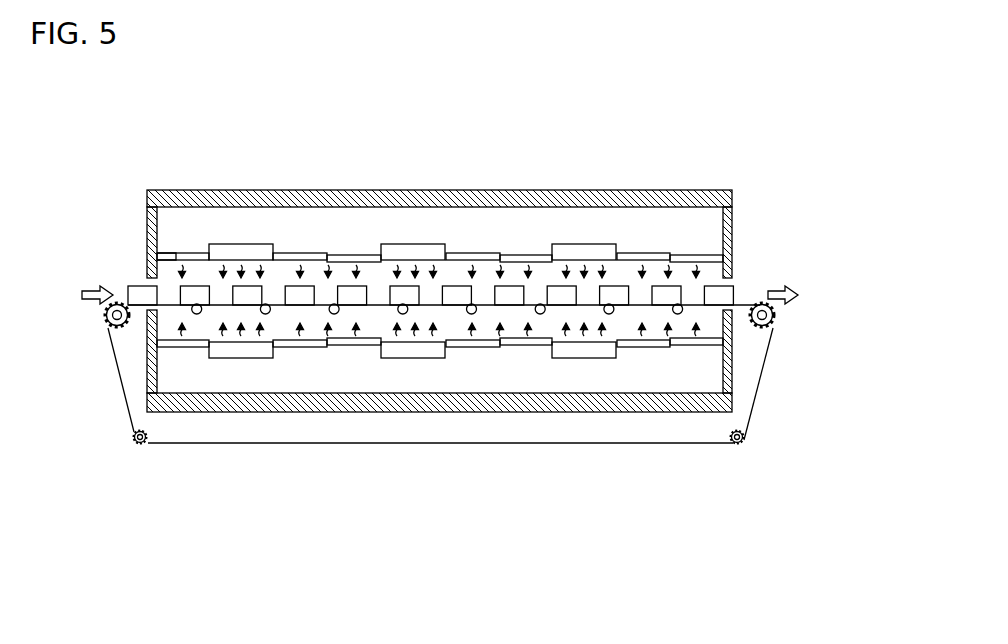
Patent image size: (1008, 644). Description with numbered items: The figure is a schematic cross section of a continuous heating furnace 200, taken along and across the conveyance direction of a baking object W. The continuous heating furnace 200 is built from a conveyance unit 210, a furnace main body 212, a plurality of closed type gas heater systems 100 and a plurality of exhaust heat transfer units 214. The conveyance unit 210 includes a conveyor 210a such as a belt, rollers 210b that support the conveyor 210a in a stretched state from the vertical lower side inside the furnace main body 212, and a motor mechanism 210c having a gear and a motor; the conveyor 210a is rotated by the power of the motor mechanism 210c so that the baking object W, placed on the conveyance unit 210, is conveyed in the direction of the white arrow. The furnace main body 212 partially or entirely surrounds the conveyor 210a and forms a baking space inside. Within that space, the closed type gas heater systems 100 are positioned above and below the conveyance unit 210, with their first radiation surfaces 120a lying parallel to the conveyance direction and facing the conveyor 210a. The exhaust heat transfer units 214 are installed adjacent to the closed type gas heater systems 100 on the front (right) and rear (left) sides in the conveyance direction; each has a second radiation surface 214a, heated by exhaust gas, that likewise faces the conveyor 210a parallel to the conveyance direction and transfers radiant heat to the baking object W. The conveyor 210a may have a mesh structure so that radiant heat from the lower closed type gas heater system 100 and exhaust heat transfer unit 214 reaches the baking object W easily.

The continuous heating furnace 200 is at (697, 73).
The furnace main body 212 is at (713, 190).
The exhaust heat transfer unit 214 is at (182, 253).
The second radiation surface 214a is at (171, 265).
The closed type gas heater system 100 is at (240, 244).
The first radiation surface 120a is at (540, 270).
The baking object W is at (731, 279).
The conveyance unit 210 is at (442, 434).
The conveyor 210a is at (667, 445).
The roller 210b is at (610, 314).
The motor mechanism 210c is at (575, 508).